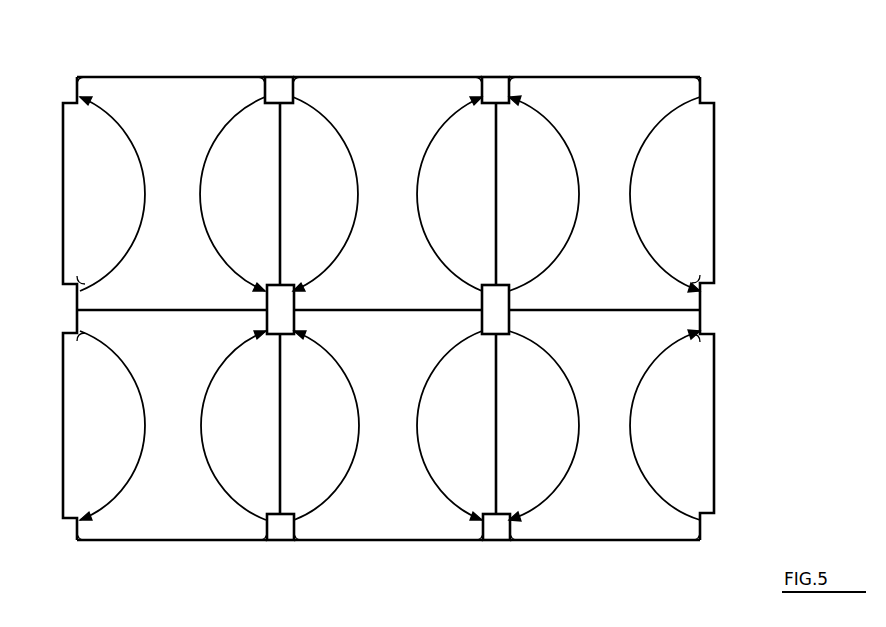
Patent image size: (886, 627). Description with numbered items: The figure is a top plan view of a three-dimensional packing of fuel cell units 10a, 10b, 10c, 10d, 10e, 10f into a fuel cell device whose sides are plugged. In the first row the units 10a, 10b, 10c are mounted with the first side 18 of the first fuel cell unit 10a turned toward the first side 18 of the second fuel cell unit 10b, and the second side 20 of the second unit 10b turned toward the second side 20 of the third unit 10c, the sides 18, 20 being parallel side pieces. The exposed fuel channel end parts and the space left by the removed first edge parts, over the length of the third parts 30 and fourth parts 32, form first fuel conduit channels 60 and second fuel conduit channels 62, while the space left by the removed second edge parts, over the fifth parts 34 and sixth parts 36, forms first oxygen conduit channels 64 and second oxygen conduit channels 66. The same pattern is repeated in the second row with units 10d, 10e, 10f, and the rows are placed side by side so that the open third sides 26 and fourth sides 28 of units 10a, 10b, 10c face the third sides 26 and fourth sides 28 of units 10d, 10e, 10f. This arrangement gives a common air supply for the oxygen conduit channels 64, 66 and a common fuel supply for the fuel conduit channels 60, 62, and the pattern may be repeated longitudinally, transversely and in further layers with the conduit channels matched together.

The first fuel cell unit 10a is at (147, 522).
The second fuel cell unit 10b is at (364, 522).
The third fuel cell unit 10c is at (588, 522).
The fuel cell unit 10d is at (133, 93).
The fuel cell unit 10e is at (354, 92).
The fuel cell unit 10f is at (587, 92).
The first side 18 is at (714, 200).
The second side 20 is at (62, 197).
The third side 26 is at (176, 77).
The fourth side 28 is at (404, 77).
The third part 30 is at (258, 77).
The fourth part 32 is at (300, 77).
The fifth part 34 is at (82, 77).
The sixth part 36 is at (474, 77).
The first fuel conduit channel 60 is at (290, 101).
The second fuel conduit channel 62 is at (291, 322).
The first oxygen conduit channel 64 is at (506, 322).
The second oxygen conduit channel 66 is at (506, 101).